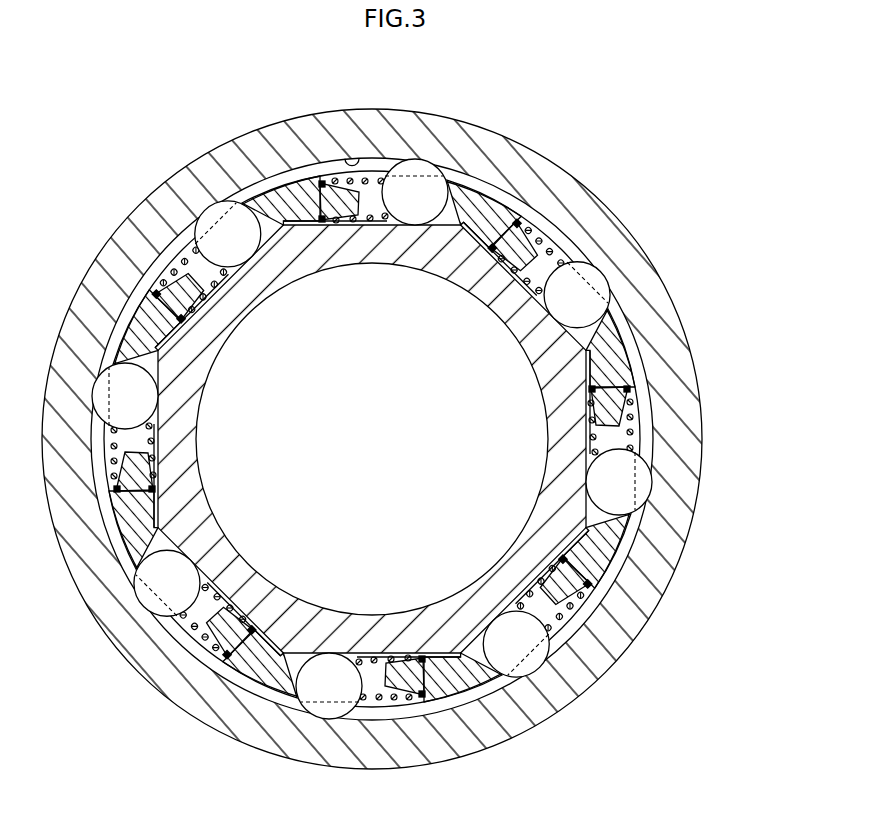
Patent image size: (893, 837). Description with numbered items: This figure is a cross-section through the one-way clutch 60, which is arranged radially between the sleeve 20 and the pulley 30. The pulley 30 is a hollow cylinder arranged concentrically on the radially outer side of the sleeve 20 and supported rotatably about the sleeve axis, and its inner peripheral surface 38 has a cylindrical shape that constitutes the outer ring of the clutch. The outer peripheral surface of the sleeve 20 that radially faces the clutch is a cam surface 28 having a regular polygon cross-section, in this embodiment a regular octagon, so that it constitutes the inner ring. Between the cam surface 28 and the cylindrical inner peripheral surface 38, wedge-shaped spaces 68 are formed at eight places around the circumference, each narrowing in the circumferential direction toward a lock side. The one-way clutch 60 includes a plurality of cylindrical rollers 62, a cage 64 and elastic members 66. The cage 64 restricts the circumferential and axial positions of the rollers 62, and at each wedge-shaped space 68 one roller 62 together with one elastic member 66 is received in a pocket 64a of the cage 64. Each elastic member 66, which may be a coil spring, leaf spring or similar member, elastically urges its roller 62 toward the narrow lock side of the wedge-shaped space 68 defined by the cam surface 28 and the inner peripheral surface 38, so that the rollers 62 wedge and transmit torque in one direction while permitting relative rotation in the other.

The sleeve 20 is at (200, 367).
The cam surface 28 is at (380, 222).
The pulley 30 is at (510, 158).
The inner peripheral surface 38 is at (352, 162).
The one-way clutch 60 is at (560, 210).
The cylindrical roller 62 is at (570, 264).
The cage 64 is at (612, 350).
The pocket 64a is at (600, 280).
The elastic member 66 is at (552, 238).
The wedge-shaped space 68 is at (584, 351).